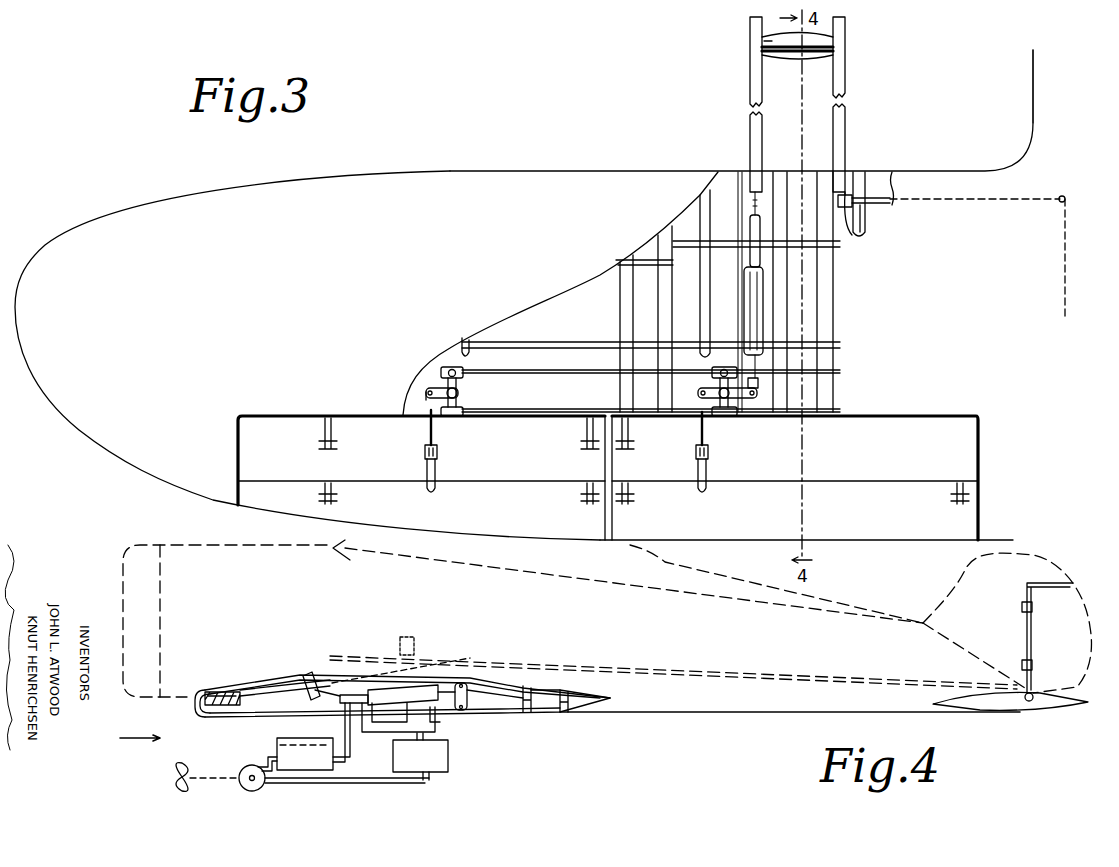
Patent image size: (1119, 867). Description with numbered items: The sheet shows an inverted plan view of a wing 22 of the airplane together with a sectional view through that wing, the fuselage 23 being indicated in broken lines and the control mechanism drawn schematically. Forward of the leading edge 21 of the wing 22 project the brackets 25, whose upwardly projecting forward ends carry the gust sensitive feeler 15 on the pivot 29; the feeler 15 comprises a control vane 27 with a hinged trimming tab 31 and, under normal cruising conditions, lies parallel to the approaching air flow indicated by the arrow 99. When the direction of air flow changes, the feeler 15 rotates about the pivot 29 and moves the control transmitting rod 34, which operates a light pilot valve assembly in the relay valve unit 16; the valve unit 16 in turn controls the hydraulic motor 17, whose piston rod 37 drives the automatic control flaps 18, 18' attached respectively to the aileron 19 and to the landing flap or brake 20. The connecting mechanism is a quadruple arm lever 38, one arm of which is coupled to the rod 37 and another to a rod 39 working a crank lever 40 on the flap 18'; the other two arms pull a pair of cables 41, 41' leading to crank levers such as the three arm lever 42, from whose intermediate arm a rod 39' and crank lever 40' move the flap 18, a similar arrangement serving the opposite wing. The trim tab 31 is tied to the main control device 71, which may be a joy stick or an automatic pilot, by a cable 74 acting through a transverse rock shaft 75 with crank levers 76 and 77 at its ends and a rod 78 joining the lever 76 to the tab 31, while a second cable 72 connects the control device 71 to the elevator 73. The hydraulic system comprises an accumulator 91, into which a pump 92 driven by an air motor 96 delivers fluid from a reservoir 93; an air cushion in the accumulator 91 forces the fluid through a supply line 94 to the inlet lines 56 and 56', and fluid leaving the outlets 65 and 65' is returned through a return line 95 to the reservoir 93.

In FIG. 3, the feeler 15 is at (764, 42).
In FIG. 4, the feeler 15 is at (213, 694).
In FIG. 3, the valve unit 16 is at (765, 245).
In FIG. 4, the valve unit 16 is at (357, 689).
In FIG. 3, the hydraulic motor 17 is at (775, 320).
In FIG. 4, the hydraulic motor 17 is at (402, 686).
In FIG. 3, the flap 18 is at (421, 478).
In FIG. 3, the flap 18' is at (806, 478).
In FIG. 4, the flap 18' is at (570, 669).
In FIG. 3, the aileron 19 is at (236, 450).
In FIG. 3, the landing flap 20 is at (964, 469).
In FIG. 4, the landing flap 20 is at (527, 688).
In FIG. 3, the leading edge 21 is at (483, 171).
In FIG. 3, the wing 22 is at (383, 275).
In FIG. 3, the fuselage 23 is at (1012, 86).
In FIG. 4, the fuselage 23 is at (175, 543).
In FIG. 3, the brackets 25 is at (752, 97).
In FIG. 3, the control vane 27 is at (836, 47).
In FIG. 4, the pivot 29 is at (196, 708).
In FIG. 3, the trimming tab 31 is at (836, 62).
In FIG. 4, the trimming tab 31 is at (238, 692).
In FIG. 3, the control transmitting rod 34 is at (752, 201).
In FIG. 3, the piston rod 37 is at (758, 356).
In FIG. 4, the piston rod 37 is at (480, 684).
In FIG. 3, the quadruple arm lever 38 is at (742, 400).
In FIG. 3, the rod 39 is at (721, 430).
In FIG. 3, the rod 39' is at (405, 429).
In FIG. 3, the crank lever 40 is at (721, 468).
In FIG. 3, the crank lever 40' is at (410, 468).
In FIG. 3, the cable 41 is at (651, 335).
In FIG. 3, the cable 41' is at (665, 417).
In FIG. 3, the three arm lever 42 is at (440, 375).
In FIG. 4, the inlet 56 is at (397, 737).
In FIG. 4, the inlet line 56' is at (463, 720).
In FIG. 4, the outlet 65 is at (329, 732).
In FIG. 4, the outlet 65' is at (459, 668).
In FIG. 4, the main control device 71 is at (414, 646).
In FIG. 4, the cable 72 is at (804, 674).
In FIG. 4, the elevator 73 is at (1057, 705).
In FIG. 3, the cable 74 is at (1067, 296).
In FIG. 4, the cable 74 is at (375, 673).
In FIG. 3, the transverse rock shaft 75 is at (878, 202).
In FIG. 4, the transverse rock shaft 75 is at (330, 690).
In FIG. 3, the crank lever 76 is at (857, 240).
In FIG. 4, the crank lever 76 is at (308, 680).
In FIG. 3, the crank lever 77 is at (1060, 206).
In FIG. 3, the rod 78 is at (843, 190).
In FIG. 4, the rod 78 is at (266, 688).
In FIG. 4, the accumulator 91 is at (282, 738).
In FIG. 4, the pump 92 is at (246, 769).
In FIG. 4, the reservoir 93 is at (445, 766).
In FIG. 4, the supply line 94 is at (440, 736).
In FIG. 4, the return line 95 is at (333, 755).
In FIG. 4, the air motor 96 is at (174, 779).
In FIG. 4, the arrow 99 is at (140, 749).